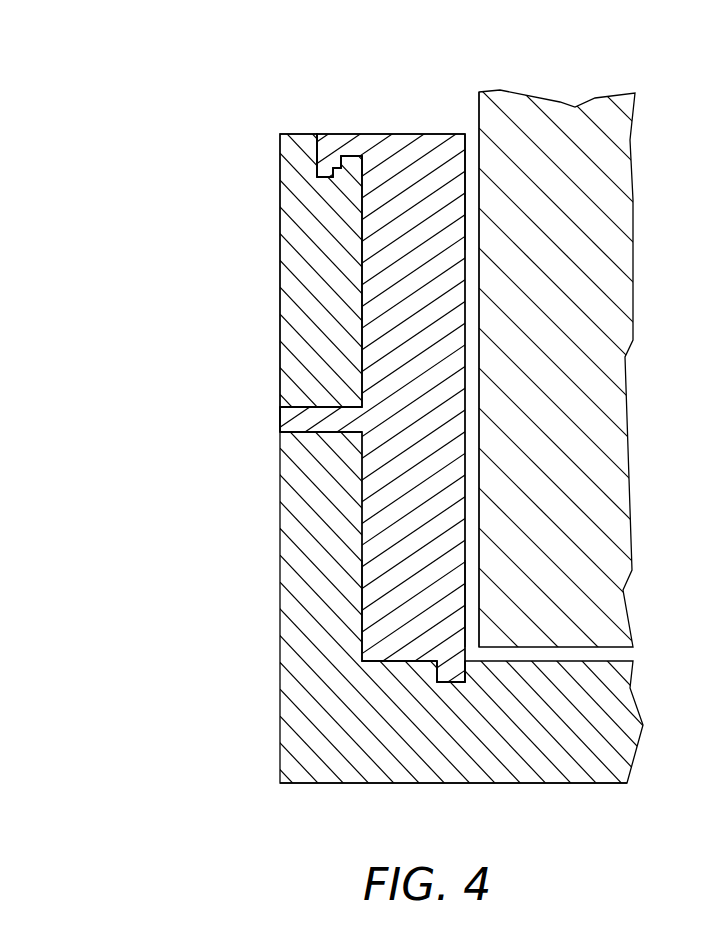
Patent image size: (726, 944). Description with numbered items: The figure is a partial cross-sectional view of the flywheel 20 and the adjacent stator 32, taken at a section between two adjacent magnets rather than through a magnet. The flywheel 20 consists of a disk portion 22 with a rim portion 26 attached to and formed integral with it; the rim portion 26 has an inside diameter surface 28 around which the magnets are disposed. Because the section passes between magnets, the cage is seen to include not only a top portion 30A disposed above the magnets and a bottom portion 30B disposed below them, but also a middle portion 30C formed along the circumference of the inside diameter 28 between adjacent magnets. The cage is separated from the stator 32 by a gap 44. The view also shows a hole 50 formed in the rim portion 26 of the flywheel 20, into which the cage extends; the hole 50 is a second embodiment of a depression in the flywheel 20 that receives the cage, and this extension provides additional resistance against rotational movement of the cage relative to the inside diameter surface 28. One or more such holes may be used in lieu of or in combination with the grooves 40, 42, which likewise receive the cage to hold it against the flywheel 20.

The flywheel 20 is at (280, 696).
The disk portion 22 is at (527, 773).
The rim portion 26 is at (290, 287).
The inside diameter surface 28 is at (364, 170).
The top portion 30A is at (404, 148).
The bottom portion 30B is at (372, 639).
The middle portion 30C is at (447, 305).
The stator 32 is at (613, 521).
The groove 40 is at (452, 683).
The groove 42 is at (317, 163).
The gap 44 is at (472, 143).
The hole 50 is at (300, 431).